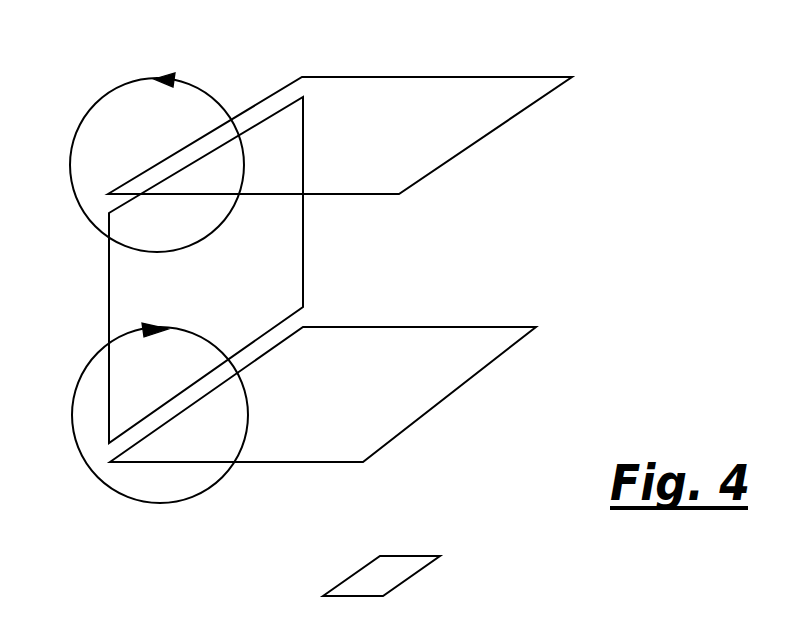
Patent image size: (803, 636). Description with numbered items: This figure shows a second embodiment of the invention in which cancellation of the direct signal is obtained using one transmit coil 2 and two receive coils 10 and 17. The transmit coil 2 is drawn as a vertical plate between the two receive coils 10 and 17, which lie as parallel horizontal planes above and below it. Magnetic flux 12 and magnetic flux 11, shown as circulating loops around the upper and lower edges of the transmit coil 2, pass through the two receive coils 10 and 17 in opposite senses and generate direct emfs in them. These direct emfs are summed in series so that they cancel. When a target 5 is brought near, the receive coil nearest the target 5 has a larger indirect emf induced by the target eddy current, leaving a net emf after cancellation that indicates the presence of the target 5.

The transmit coil 2 is at (108, 288).
The target 5 is at (413, 573).
The receive coil 10 is at (527, 77).
The magnetic flux 11 is at (93, 108).
The magnetic flux 12 is at (118, 492).
The receive coil 17 is at (507, 326).